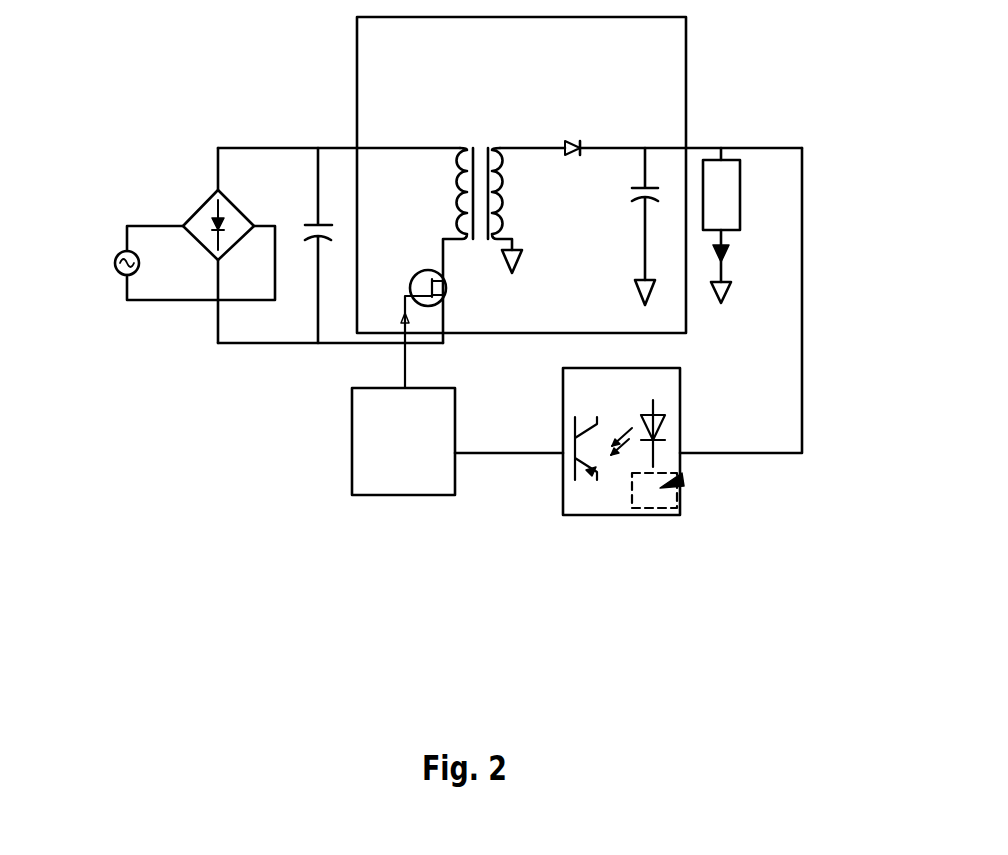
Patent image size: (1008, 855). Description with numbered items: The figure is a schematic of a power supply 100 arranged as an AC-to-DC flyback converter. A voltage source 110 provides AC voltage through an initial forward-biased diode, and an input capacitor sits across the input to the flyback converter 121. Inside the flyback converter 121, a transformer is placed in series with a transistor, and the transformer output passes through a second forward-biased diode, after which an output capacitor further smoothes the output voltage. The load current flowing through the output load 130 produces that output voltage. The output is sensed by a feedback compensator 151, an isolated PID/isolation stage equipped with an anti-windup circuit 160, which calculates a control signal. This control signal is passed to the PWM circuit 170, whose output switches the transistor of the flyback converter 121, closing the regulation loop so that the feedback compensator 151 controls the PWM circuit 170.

The power supply 100 is at (112, 54).
The voltage source 110 is at (140, 263).
The flyback converter 121 is at (579, 202).
The output load 130 is at (745, 225).
The feedback compensator 151 is at (620, 471).
The anti-windup circuit 160 is at (797, 592).
The pulse-width modulator (PWM) circuit 170 is at (403, 441).